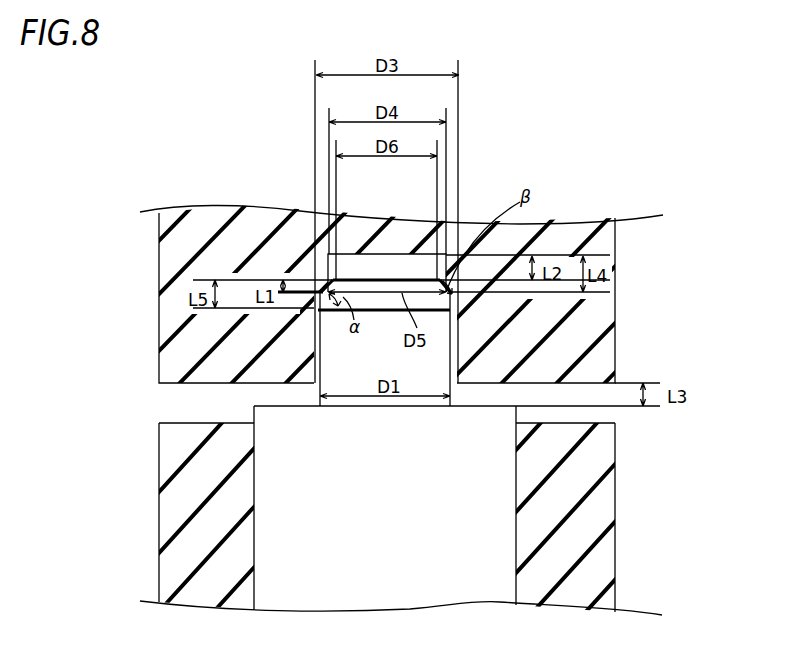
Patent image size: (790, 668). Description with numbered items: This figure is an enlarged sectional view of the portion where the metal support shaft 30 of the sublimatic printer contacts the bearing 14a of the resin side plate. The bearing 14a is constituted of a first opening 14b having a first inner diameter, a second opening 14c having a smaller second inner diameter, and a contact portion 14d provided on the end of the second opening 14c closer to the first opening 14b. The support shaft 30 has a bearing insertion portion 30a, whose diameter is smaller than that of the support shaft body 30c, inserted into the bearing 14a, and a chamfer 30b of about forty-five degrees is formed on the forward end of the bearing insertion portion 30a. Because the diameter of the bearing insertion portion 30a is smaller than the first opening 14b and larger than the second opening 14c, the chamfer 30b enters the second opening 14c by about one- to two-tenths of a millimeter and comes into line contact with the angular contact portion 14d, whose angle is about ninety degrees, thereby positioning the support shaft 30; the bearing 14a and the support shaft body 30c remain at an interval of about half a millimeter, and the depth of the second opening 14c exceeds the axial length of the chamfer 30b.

The bearing 14a is at (159, 238).
The first opening 14b is at (326, 380).
The second opening 14c is at (428, 258).
The contact portion 14d is at (320, 297).
The support shaft 30 is at (518, 488).
The bearing insertion portion 30a is at (318, 398).
The chamfer 30b is at (333, 284).
The support shaft body 30c is at (518, 440).